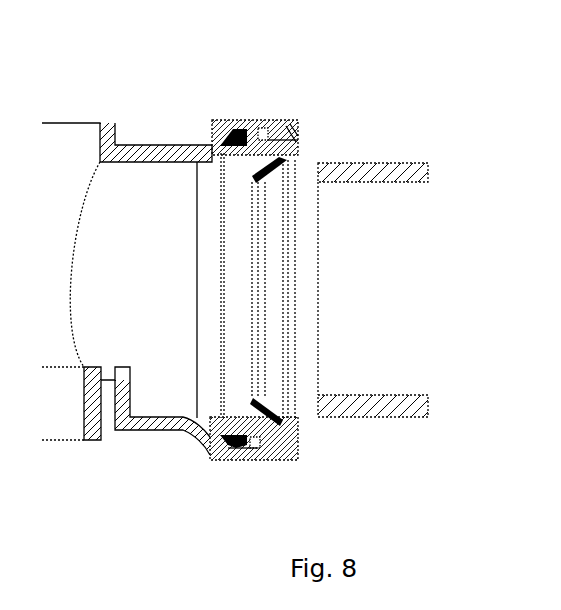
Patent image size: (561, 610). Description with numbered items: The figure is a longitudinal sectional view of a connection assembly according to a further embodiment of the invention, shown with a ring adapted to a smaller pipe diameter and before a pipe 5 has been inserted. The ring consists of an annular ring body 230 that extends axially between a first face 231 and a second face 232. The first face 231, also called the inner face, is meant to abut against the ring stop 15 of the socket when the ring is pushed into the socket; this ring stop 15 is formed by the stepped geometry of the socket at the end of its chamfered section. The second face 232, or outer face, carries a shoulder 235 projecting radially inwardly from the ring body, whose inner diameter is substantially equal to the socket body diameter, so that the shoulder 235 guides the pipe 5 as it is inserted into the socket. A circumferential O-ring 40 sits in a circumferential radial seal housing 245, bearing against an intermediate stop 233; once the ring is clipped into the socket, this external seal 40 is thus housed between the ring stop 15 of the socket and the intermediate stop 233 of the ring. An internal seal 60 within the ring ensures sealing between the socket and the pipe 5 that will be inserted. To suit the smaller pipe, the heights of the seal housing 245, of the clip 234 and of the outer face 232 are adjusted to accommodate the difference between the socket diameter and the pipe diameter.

The pipe 5 is at (427, 168).
The ring stop 15 is at (220, 145).
The O-ring 40 is at (218, 447).
The internal seal 60 is at (272, 343).
The annular ring body 230 is at (279, 119).
The first face 231 is at (197, 163).
The second face 232 is at (294, 137).
The intermediate stop 233 is at (222, 128).
The clip 234 is at (258, 130).
The shoulder 235 is at (283, 146).
The seal housing 245 is at (235, 450).